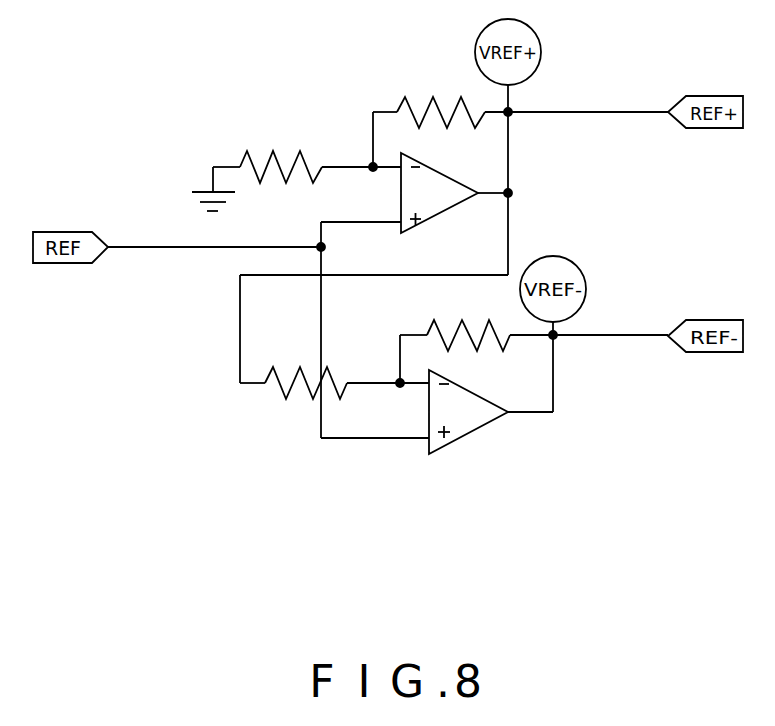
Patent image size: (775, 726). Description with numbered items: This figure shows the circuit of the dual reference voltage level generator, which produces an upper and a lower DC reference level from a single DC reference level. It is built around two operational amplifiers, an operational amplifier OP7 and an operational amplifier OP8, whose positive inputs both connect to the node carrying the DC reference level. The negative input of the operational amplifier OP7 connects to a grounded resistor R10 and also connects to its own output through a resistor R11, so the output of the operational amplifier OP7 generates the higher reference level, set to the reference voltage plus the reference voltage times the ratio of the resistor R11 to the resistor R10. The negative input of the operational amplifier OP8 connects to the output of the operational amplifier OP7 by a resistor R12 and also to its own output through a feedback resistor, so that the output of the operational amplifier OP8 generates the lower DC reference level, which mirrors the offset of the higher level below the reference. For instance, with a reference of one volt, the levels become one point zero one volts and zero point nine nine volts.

The resistor R10 is at (307, 146).
The resistor R11 is at (520, 87).
The resistor R12 is at (454, 346).
The operational amplifier OP7 is at (454, 189).
The operational amplifier OP8 is at (468, 420).